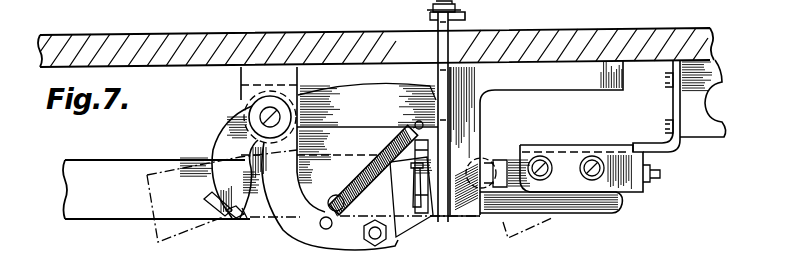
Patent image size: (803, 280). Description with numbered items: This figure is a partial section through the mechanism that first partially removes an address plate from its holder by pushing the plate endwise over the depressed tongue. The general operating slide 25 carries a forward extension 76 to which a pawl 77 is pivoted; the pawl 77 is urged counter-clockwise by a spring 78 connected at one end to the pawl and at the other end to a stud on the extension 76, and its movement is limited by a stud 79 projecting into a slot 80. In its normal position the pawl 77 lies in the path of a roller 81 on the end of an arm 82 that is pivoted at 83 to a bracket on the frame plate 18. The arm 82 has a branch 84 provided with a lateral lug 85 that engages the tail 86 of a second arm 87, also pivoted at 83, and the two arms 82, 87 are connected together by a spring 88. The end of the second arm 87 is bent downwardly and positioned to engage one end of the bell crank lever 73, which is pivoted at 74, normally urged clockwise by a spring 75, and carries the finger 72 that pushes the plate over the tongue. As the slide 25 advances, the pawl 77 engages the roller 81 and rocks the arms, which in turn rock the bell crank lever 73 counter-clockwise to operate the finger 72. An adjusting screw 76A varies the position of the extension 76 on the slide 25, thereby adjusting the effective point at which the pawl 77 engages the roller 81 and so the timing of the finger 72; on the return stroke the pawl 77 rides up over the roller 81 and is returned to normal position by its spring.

The base plate 18 is at (563, 34).
The general operating slide 25 is at (718, 132).
The finger 72 is at (444, 6).
The bell crank lever 73 is at (432, 21).
The pivot 74 is at (440, 220).
The spring 75 is at (414, 123).
The forward extension 76 is at (98, 222).
The adjusting screw 76A is at (660, 174).
The pawl 77 is at (412, 224).
The spring 78 is at (369, 177).
The stud 79 is at (411, 178).
The slot 80 is at (425, 190).
The roller 81 is at (400, 246).
The arm 82 is at (330, 243).
The pivot 83 is at (262, 113).
The branch 84 is at (210, 198).
The lateral lug 85 is at (233, 218).
The tail 86 is at (248, 219).
The second arm 87 is at (352, 100).
The spring 88 is at (367, 139).